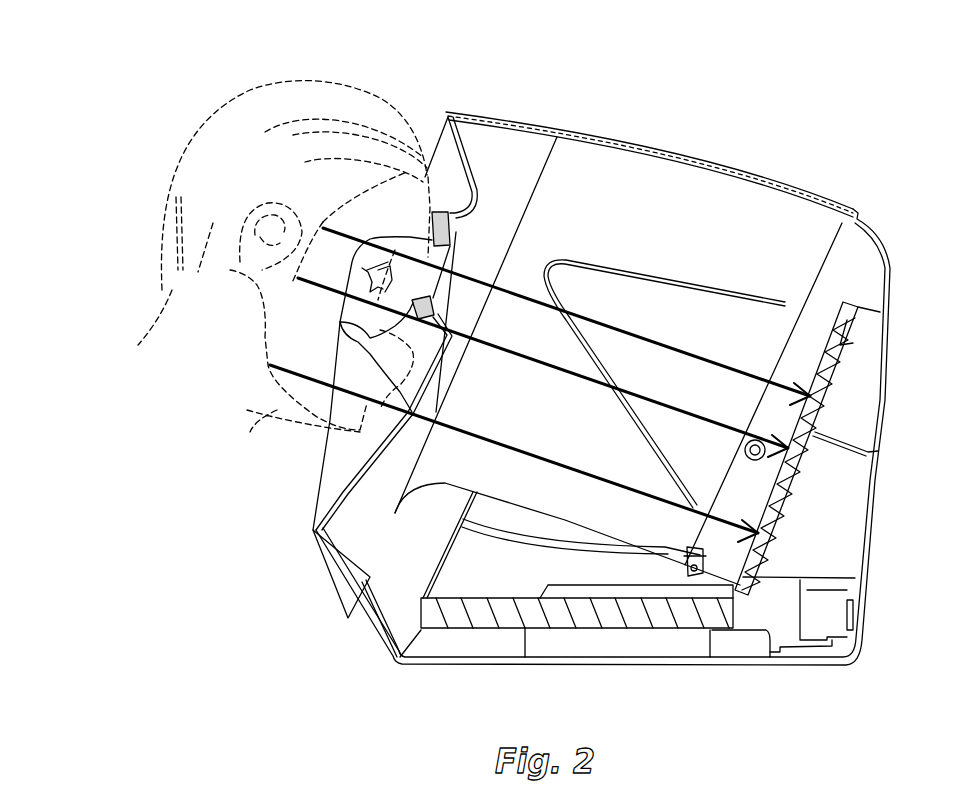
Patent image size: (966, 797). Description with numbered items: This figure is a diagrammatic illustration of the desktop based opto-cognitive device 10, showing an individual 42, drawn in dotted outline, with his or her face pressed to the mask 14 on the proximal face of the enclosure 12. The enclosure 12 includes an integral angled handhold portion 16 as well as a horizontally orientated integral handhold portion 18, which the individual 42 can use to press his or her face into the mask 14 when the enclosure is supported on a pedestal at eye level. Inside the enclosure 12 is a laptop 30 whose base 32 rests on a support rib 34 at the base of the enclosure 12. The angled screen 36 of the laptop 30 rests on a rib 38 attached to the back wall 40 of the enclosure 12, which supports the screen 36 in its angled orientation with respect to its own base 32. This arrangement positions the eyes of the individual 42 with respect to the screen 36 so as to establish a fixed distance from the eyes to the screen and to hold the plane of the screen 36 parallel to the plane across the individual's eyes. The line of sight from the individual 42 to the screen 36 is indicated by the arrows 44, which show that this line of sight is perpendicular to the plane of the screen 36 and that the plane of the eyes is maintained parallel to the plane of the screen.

The desktop based opto-cognitive device 10 is at (675, 125).
The enclosure 12 is at (775, 182).
The mask 14 is at (340, 322).
The angled handhold portion 16 is at (623, 397).
The horizontally orientated handhold portion 18 is at (703, 283).
The laptop 30 is at (812, 417).
The base 32 is at (667, 615).
The support rib 34 is at (482, 642).
The angled screen 36 is at (780, 488).
The rib 38 is at (853, 343).
The back wall 40 is at (866, 562).
The individual 42 is at (372, 88).
The arrows 44 is at (687, 348).